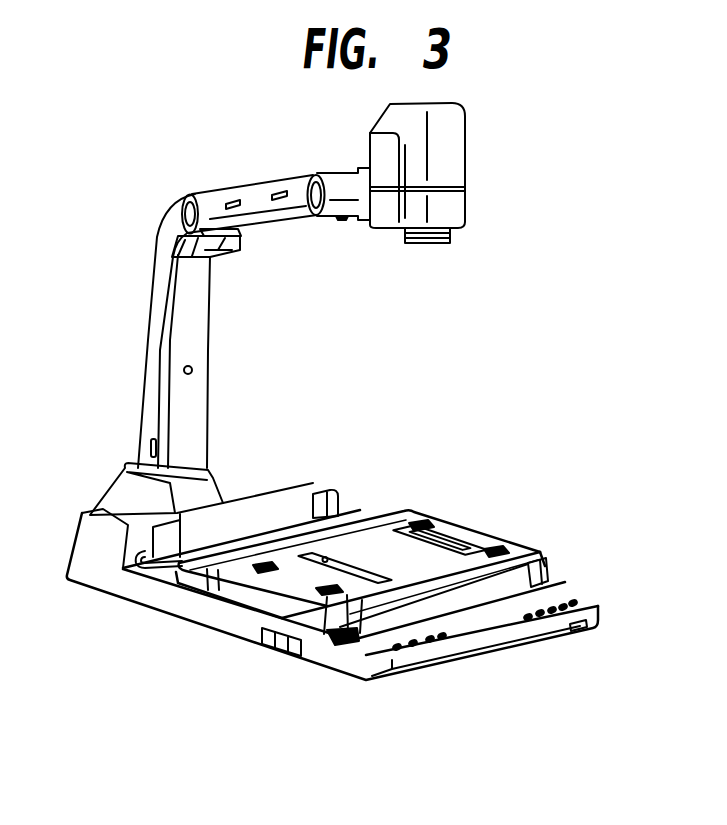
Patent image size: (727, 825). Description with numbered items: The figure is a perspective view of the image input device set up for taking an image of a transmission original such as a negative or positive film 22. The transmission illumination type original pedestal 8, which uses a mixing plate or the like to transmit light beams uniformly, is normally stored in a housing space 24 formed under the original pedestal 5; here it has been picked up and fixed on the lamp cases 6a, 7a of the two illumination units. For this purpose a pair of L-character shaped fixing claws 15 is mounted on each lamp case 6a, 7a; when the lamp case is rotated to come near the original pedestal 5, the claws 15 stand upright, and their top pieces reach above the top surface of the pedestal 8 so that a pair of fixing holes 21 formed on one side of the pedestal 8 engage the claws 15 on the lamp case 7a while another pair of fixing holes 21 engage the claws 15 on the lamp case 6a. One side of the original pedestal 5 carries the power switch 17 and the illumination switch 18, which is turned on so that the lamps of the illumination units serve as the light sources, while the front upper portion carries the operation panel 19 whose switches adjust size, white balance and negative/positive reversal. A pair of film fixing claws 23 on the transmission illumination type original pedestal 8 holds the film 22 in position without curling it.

The original pedestal 5 is at (487, 603).
The lamp case 6a is at (216, 583).
The lamp case 7a is at (548, 560).
The transmission illumination type original pedestal 8 is at (361, 542).
The L-character shaped fixing claw 15 is at (418, 518).
The power switch 17 is at (295, 654).
The illumination switch 18 is at (268, 648).
The operation panel 19 is at (434, 648).
The fixing holes 21 is at (266, 562).
The negative film or positive film 22 is at (472, 542).
The film fixing claws 23 is at (447, 540).
The housing space 24 is at (580, 618).